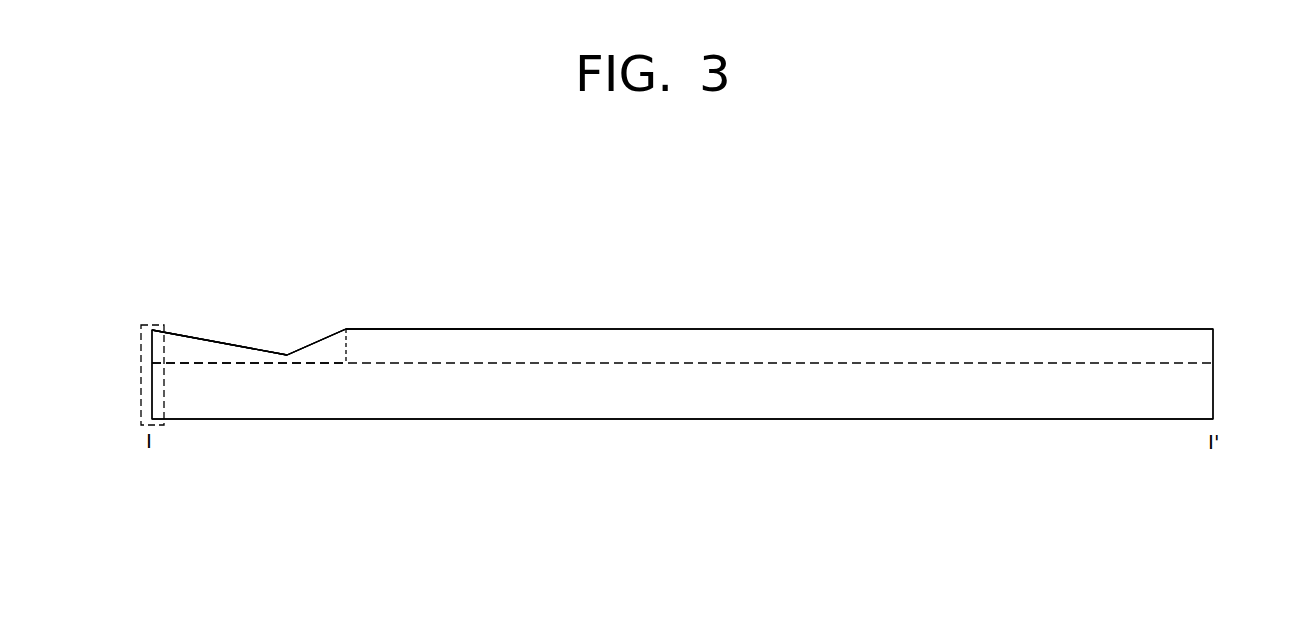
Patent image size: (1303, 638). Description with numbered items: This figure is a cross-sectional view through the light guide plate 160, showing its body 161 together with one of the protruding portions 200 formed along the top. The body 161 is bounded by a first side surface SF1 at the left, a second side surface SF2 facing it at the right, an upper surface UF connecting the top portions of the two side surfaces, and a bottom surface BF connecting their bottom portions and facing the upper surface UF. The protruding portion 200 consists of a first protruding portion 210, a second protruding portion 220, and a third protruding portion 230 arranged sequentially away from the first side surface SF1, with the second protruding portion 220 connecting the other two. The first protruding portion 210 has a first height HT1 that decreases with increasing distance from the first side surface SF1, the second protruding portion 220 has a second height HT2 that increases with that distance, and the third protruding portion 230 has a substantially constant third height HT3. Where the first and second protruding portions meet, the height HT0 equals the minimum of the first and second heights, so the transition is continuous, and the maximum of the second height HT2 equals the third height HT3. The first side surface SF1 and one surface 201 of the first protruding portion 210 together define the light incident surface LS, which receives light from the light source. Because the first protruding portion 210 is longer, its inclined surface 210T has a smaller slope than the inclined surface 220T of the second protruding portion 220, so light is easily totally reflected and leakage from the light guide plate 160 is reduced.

The light guide plate 160 is at (1168, 256).
The body 161 is at (172, 381).
The protruding portion 200 is at (468, 487).
The one surface of the first protruding portion 201 is at (152, 343).
The first protruding portion 210 is at (195, 352).
The second protruding portion 220 is at (330, 352).
The third protruding portion 230 is at (450, 352).
The inclined surface of the first protruding portion 210T is at (242, 346).
The inclined surface of the second protruding portion 220T is at (330, 338).
The light incident surface LS is at (161, 325).
The first side surface SF1 is at (152, 404).
The second side surface SF2 is at (1213, 375).
The upper surface UF is at (678, 363).
The bottom surface BF is at (683, 420).
The height of the protruding surface HT0 is at (288, 343).
The first height HT1 is at (214, 369).
The second height HT2 is at (311, 369).
The third height HT3 is at (412, 369).